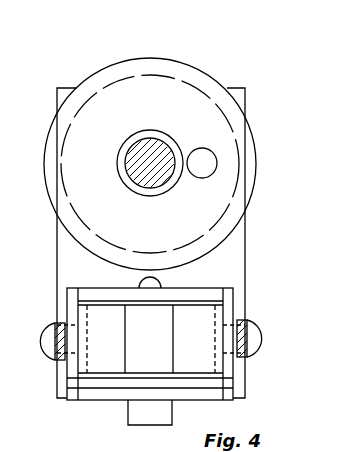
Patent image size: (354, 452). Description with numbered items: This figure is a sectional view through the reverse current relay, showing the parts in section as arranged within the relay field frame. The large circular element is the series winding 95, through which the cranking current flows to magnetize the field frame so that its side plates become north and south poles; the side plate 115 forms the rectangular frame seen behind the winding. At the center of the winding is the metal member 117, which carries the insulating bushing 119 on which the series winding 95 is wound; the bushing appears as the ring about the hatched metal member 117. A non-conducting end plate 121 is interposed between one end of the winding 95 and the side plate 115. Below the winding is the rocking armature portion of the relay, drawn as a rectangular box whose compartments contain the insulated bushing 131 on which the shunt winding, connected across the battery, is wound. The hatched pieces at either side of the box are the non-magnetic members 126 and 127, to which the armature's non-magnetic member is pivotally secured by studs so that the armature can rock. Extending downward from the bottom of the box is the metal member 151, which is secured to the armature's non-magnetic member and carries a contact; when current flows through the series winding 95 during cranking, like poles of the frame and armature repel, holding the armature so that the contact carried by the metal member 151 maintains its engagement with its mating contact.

The series winding 95 is at (195, 88).
The side plate 115 is at (229, 257).
The metal member 117 is at (155, 155).
The insulating bushing 119 is at (130, 130).
The non-conducting end plate 121 is at (113, 60).
The non-magnetic member 126 is at (58, 323).
The non-magnetic member 127 is at (248, 356).
The insulated bushing 131 is at (158, 338).
The metal member 151 is at (135, 415).